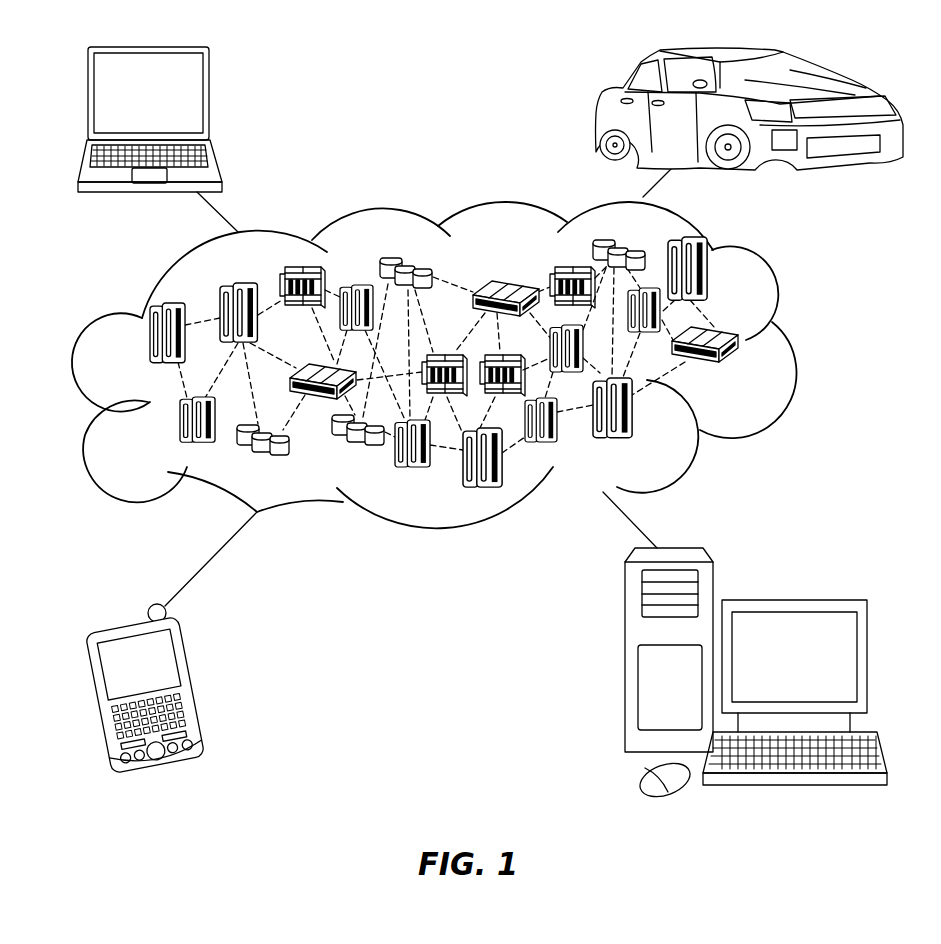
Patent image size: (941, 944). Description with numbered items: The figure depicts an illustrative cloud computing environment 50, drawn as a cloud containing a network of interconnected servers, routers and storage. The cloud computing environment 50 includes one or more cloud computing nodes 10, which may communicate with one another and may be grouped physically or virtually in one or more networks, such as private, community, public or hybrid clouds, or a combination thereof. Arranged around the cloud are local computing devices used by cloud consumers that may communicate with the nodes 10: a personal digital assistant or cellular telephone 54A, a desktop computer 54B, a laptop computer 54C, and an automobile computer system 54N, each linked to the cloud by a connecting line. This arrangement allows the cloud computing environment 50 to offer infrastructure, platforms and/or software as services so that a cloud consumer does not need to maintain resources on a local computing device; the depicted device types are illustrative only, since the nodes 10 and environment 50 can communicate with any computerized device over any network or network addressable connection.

The cloud computing node 10 is at (784, 389).
The cloud computing environment 50 is at (790, 342).
The personal digital assistant (PDA) or cellular telephone 54A is at (202, 680).
The desktop computer 54B is at (792, 600).
The laptop computer 54C is at (210, 102).
The automobile computer system 54N is at (594, 114).